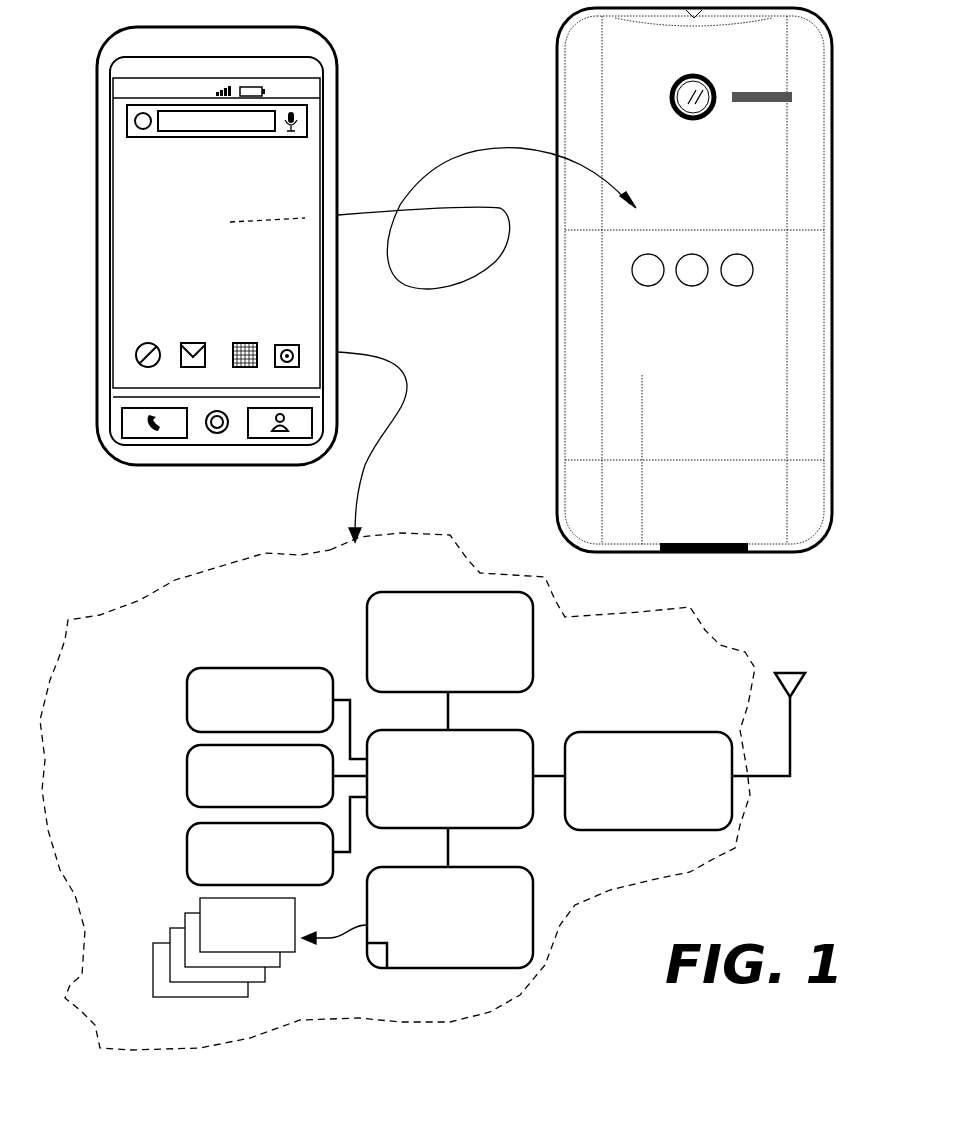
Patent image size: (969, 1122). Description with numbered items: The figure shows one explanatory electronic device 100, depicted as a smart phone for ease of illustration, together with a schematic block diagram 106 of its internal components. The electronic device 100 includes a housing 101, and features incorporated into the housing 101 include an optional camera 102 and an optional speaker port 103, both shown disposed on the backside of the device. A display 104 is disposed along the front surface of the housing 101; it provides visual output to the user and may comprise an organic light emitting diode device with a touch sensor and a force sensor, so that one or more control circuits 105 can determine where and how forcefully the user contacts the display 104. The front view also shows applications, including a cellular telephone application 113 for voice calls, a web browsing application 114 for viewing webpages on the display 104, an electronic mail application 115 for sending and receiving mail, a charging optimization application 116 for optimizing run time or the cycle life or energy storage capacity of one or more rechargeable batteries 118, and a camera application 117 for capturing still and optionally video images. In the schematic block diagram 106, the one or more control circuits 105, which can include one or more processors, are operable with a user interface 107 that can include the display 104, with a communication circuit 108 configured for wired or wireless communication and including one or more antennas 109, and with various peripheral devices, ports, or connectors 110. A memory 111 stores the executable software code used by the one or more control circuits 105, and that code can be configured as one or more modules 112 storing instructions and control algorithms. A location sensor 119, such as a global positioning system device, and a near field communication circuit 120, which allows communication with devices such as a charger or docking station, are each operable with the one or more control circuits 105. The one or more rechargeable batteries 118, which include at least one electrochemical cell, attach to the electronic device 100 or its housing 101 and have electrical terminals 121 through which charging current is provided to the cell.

The electronic device 100 is at (376, 118).
The housing 101 is at (560, 105).
The camera 102 is at (692, 118).
The speaker port 103 is at (765, 103).
The display 104 is at (305, 178).
The one or more control circuits 105 is at (534, 743).
The schematic block diagram 106 is at (714, 636).
The user interface 107 is at (366, 638).
The communication circuit 108 is at (643, 731).
The antennas 109 is at (785, 670).
The peripheral devices, ports, or connectors 110 is at (703, 553).
The memory 111 is at (534, 903).
The modules 112 is at (131, 946).
The cellular telephone application 113 is at (140, 430).
The web browsing application 114 is at (150, 343).
The electronic mail application 115 is at (195, 343).
The charging optimization application 116 is at (245, 343).
The camera application 117 is at (282, 345).
The rechargeable batteries 118 is at (186, 774).
The location sensor 119 is at (186, 696).
The near field communication circuit 120 is at (186, 850).
The electrical terminals 121 is at (648, 286).